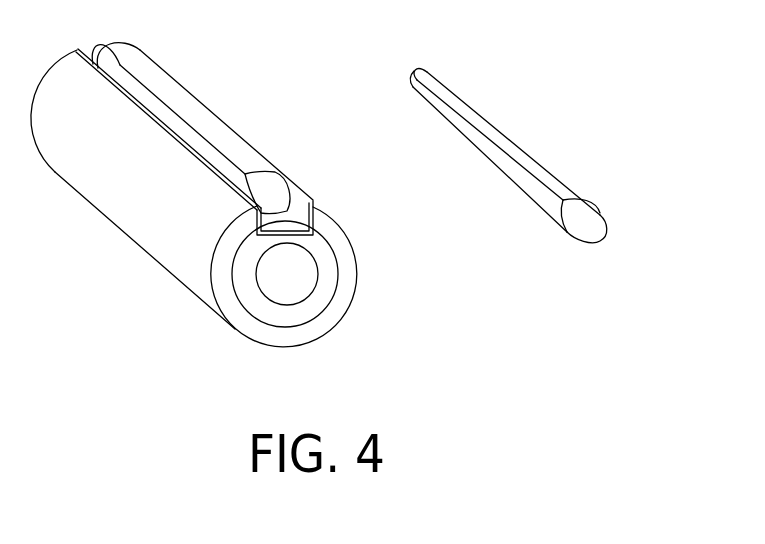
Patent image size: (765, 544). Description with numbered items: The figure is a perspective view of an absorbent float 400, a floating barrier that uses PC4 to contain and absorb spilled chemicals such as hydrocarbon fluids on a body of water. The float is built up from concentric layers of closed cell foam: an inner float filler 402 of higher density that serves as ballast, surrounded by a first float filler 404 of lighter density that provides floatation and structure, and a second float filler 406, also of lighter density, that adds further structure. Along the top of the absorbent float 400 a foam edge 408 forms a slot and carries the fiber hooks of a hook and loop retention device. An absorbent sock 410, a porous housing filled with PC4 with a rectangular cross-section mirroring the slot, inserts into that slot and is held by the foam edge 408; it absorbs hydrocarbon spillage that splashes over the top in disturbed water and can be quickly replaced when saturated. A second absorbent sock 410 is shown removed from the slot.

The absorbent float 400 is at (345, 219).
The inner float filler 402 is at (285, 284).
The first float filler 404 is at (323, 300).
The second float filler 406 is at (355, 280).
The foam edge 408 is at (303, 203).
The absorbent sock 410 is at (158, 82).